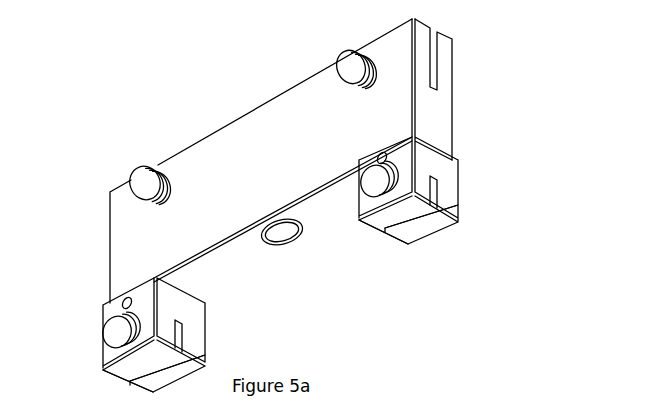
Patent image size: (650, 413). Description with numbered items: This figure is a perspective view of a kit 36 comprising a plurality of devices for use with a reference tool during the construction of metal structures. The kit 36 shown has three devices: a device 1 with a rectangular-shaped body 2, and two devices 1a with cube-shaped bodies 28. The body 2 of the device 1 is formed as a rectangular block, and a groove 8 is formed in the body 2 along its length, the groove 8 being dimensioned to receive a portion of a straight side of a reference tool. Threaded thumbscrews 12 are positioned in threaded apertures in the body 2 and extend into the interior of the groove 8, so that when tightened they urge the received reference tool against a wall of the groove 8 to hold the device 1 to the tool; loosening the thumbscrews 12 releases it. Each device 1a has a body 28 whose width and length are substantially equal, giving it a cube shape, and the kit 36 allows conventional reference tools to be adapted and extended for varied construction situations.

The kit 36 is at (197, 108).
The device 1 is at (261, 161).
The device 1a is at (280, 205).
The body 2 is at (137, 256).
The groove 8 is at (147, 369).
The threaded thumbscrew 12 is at (114, 334).
The body 28 is at (192, 335).